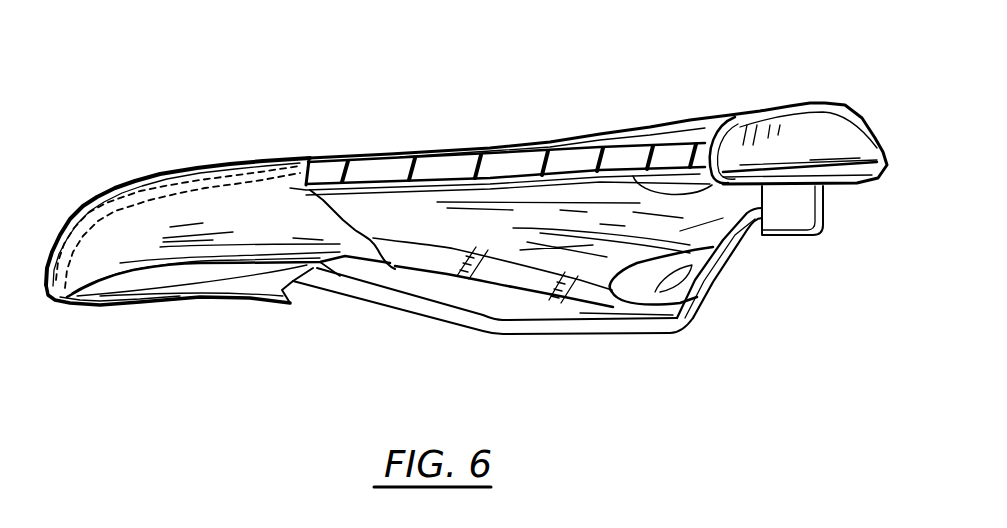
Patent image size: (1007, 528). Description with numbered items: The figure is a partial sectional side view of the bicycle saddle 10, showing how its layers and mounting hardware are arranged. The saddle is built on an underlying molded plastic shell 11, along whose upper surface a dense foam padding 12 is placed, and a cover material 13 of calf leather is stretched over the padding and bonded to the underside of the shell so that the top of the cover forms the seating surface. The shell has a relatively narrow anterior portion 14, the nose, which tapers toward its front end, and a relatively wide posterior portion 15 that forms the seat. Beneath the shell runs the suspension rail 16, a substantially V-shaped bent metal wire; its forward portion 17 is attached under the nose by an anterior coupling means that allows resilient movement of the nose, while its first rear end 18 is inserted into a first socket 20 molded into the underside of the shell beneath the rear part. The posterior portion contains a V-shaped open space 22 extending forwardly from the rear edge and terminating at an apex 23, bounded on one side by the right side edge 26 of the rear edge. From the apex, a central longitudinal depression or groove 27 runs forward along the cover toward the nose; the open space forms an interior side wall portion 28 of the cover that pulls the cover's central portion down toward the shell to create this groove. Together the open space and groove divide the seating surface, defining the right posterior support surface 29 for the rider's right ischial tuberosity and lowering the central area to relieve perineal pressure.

The bicycle saddle 10 is at (212, 140).
The shell 11 is at (390, 188).
The foam padding 12 is at (528, 163).
The cover material 13 is at (563, 145).
The anterior portion 14 is at (127, 184).
The posterior portion 15 is at (763, 110).
The suspension rail 16 is at (513, 331).
The forward portion 17 is at (323, 292).
The first rear end 18 is at (750, 230).
The first socket 20 is at (818, 235).
The V-shaped open space 22 is at (814, 148).
The apex 23 is at (731, 136).
The right side edge 26 is at (843, 116).
The depression or groove 27 is at (652, 138).
The interior side wall portion 28 is at (817, 106).
The right posterior support surface 29 is at (745, 108).